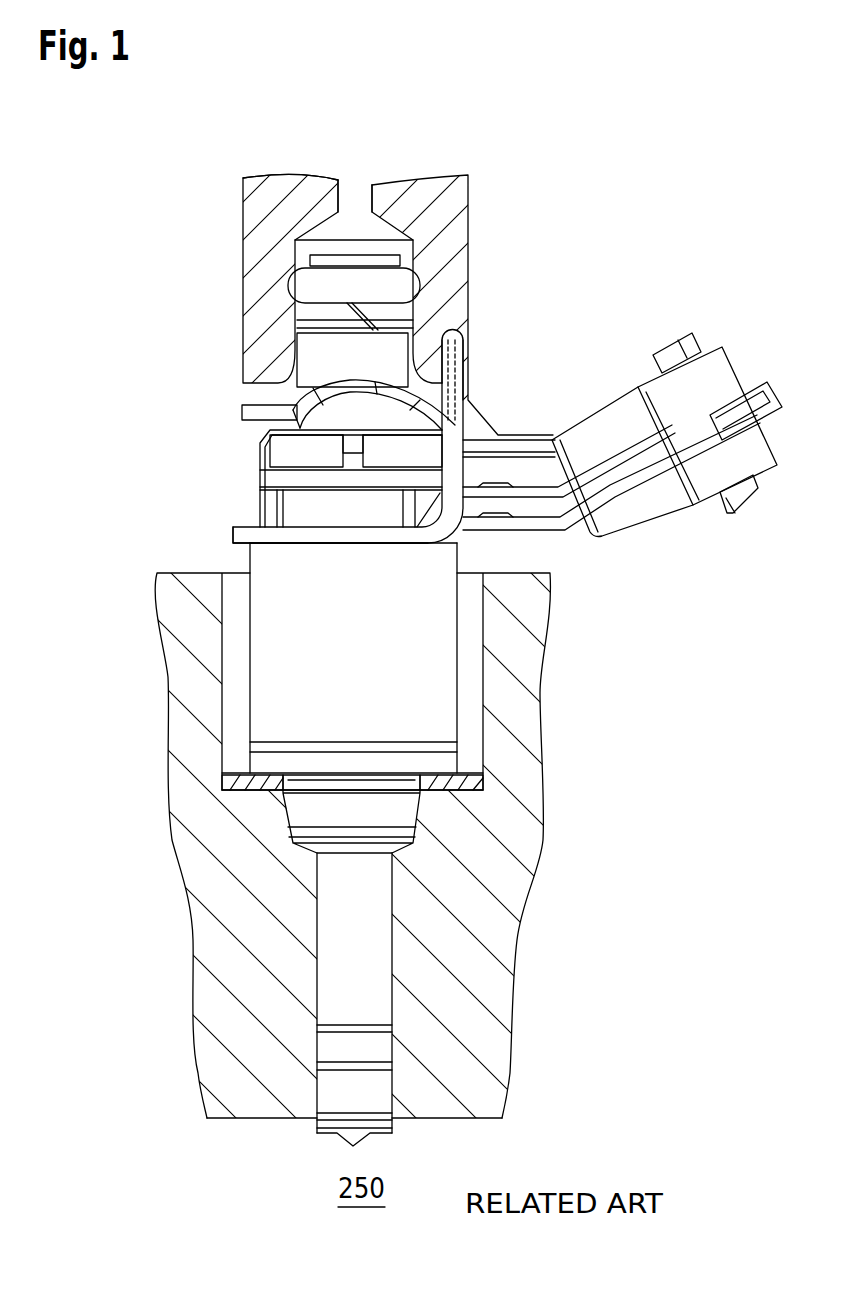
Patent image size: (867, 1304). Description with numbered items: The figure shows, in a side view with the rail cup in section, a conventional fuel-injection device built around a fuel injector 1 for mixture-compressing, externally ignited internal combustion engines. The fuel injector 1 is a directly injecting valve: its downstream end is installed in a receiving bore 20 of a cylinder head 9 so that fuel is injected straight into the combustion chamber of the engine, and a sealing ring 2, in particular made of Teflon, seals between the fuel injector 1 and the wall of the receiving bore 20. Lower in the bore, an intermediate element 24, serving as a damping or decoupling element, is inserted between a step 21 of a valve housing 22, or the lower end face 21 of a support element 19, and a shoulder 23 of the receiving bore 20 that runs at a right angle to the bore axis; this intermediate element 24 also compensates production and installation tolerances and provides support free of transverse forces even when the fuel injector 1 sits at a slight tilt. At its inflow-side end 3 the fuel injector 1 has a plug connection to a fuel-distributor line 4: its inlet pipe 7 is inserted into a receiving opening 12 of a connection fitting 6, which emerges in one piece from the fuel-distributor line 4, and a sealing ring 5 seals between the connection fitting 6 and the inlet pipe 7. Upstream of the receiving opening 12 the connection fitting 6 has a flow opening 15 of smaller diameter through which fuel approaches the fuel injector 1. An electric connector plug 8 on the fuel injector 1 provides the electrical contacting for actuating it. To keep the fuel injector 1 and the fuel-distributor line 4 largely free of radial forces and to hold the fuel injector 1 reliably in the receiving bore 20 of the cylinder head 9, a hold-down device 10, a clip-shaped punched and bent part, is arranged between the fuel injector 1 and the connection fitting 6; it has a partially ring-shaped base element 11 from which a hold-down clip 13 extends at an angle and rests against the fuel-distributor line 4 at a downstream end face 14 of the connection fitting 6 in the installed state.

The fuel injector 1 is at (477, 680).
The sealing ring 2 is at (330, 1048).
The inflow-side end 3 is at (228, 376).
The fuel-distributor line 4 is at (260, 160).
The sealing ring 5 is at (392, 287).
The connection fitting 6 is at (268, 233).
The inlet pipe 7 is at (304, 387).
The electric connector plug 8 is at (637, 507).
The cylinder head 9 is at (480, 977).
The hold-down device 10 is at (250, 537).
The base element 11 is at (400, 533).
The receiving opening 12 is at (308, 347).
The hold-down clip 13 is at (262, 411).
The downstream end face 14 is at (452, 390).
The flow opening 15 is at (362, 193).
The support element 19 is at (442, 762).
The receiving bore 20 is at (330, 976).
The lower end face 21 is at (248, 790).
The valve housing 22 is at (290, 662).
The shoulder 23 is at (230, 785).
The intermediate element 24 is at (445, 777).